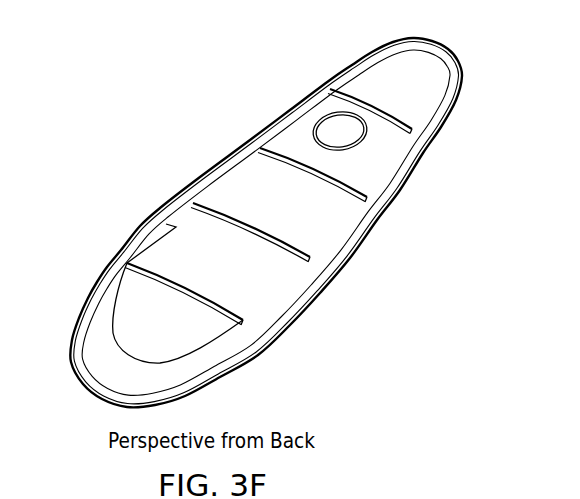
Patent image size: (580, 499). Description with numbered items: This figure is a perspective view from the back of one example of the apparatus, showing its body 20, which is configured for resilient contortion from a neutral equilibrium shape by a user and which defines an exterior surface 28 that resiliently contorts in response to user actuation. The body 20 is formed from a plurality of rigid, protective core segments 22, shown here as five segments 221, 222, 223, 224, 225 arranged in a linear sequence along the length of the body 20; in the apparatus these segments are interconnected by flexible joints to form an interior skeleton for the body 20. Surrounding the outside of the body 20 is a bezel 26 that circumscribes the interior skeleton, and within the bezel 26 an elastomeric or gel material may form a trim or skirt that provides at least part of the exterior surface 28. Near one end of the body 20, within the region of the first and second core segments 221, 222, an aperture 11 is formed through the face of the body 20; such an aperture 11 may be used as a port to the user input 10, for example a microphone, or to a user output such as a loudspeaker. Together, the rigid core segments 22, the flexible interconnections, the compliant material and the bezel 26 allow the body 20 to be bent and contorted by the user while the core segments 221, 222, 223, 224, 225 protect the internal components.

The user input 10 is at (333, 127).
The aperture 11 is at (368, 135).
The body 20 is at (313, 268).
The core segments 22 is at (273, 216).
The first core segment 221 is at (420, 98).
The second core segment 222 is at (372, 176).
The third core segment 223 is at (298, 206).
The fourth core segment 224 is at (238, 266).
The fifth core segment 225 is at (175, 326).
The bezel 26 is at (405, 188).
The exterior surface 28 is at (273, 297).